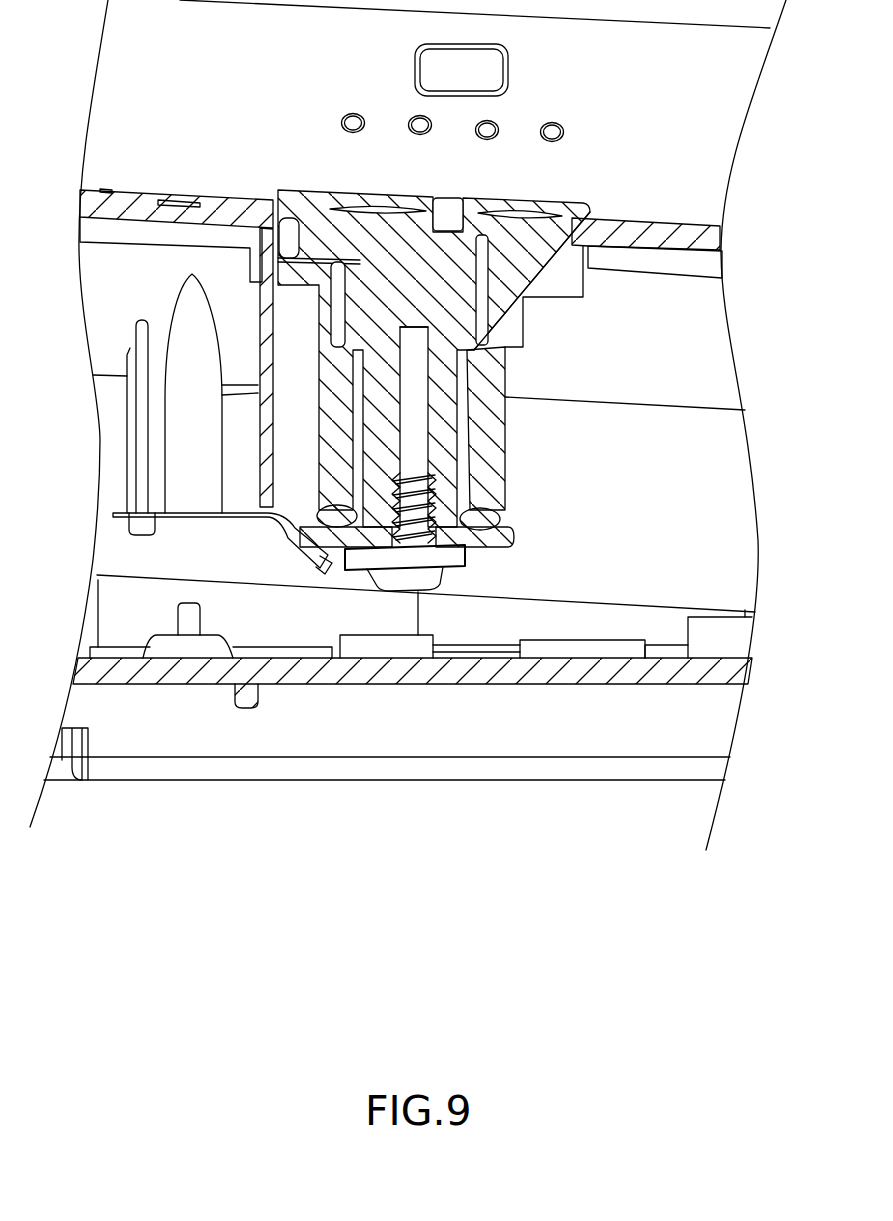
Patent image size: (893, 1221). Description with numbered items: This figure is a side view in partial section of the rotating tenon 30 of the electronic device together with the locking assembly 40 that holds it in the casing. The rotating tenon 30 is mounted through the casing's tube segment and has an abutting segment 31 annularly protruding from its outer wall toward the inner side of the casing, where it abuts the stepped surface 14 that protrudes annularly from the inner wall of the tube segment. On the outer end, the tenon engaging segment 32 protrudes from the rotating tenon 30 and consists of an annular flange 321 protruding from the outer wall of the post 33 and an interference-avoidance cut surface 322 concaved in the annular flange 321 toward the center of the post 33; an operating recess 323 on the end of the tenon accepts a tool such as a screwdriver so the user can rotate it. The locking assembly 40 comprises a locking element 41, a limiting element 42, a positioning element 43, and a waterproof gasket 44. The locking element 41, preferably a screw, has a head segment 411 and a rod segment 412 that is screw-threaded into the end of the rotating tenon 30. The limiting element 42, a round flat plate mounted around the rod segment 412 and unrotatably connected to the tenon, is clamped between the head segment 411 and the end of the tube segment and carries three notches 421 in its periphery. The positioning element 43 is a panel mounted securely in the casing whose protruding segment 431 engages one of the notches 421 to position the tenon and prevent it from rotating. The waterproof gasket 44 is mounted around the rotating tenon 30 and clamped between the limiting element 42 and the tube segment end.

The stepped surface 14 is at (470, 357).
The rotating tenon 30 is at (449, 163).
The abutting segment 31 is at (468, 355).
The tenon engaging segment 32 is at (355, 215).
The annular flange 321 is at (292, 210).
The interference-avoidance cut surface 322 is at (480, 230).
The operating recess 323 is at (448, 205).
The post 33 is at (400, 235).
The locking assembly 40 is at (378, 482).
The locking element 41 is at (461, 482).
The head segment 411 is at (433, 583).
The rod segment 412 is at (420, 503).
The limiting element 42 is at (512, 545).
The notches 421 is at (470, 378).
The positioning element 43 is at (222, 569).
The protruding segment 431 is at (320, 565).
The waterproof gasket 44 is at (497, 526).